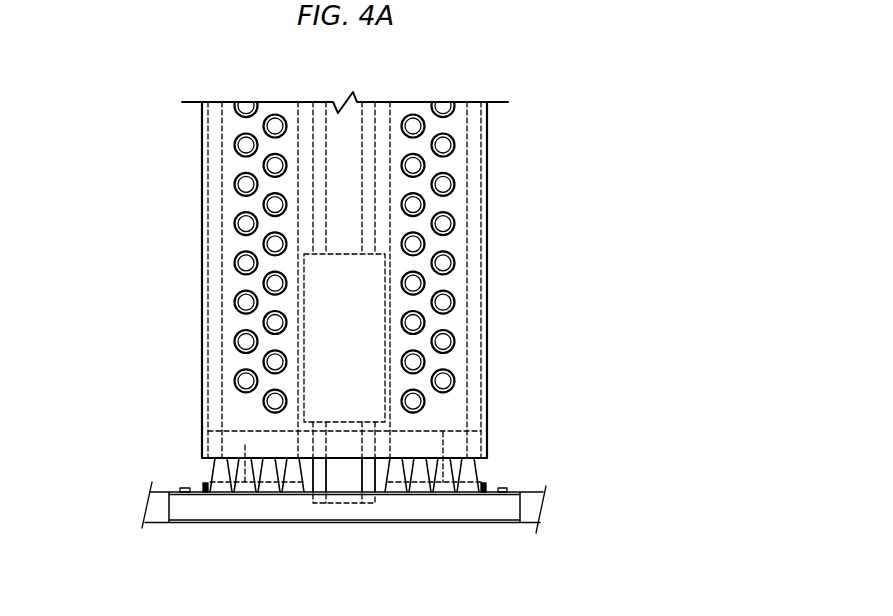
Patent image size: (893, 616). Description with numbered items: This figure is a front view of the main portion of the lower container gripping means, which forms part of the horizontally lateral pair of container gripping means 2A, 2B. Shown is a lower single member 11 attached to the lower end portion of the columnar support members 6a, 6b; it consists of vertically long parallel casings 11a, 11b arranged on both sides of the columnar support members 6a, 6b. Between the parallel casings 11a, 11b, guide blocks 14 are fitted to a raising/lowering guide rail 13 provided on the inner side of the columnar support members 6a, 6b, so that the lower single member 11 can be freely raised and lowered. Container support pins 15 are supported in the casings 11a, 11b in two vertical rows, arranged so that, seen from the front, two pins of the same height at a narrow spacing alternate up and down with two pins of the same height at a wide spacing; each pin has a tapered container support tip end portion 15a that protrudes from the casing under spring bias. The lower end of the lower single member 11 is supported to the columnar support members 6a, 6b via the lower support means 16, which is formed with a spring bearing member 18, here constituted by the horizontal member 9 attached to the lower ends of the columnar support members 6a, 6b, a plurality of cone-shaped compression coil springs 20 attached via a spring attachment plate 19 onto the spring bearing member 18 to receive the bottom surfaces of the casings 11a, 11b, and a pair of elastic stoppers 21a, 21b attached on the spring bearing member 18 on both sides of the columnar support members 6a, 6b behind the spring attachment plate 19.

The container gripping means 2A is at (312, 305).
The container gripping means 2B is at (201, 247).
The lower single member 11 is at (201, 282).
The parallel casing 11a is at (455, 125).
The parallel casing 11b is at (232, 125).
The raising/lowering guide rail 13 is at (342, 128).
The guide block 14 is at (364, 362).
The container support pin 15 is at (236, 185).
The container support tip end portion 15a is at (275, 244).
The lower support means 16 is at (488, 473).
The spring attachment plate 19 is at (199, 491).
The compression coil spring 20 is at (290, 493).
The stopper 21a is at (443, 432).
The stopper 21b is at (245, 445).
The columnar support member 6a is at (334, 520).
The columnar support member 6b is at (318, 483).
The horizontal member 9 is at (345, 525).
The spring bearing member 18 is at (465, 513).